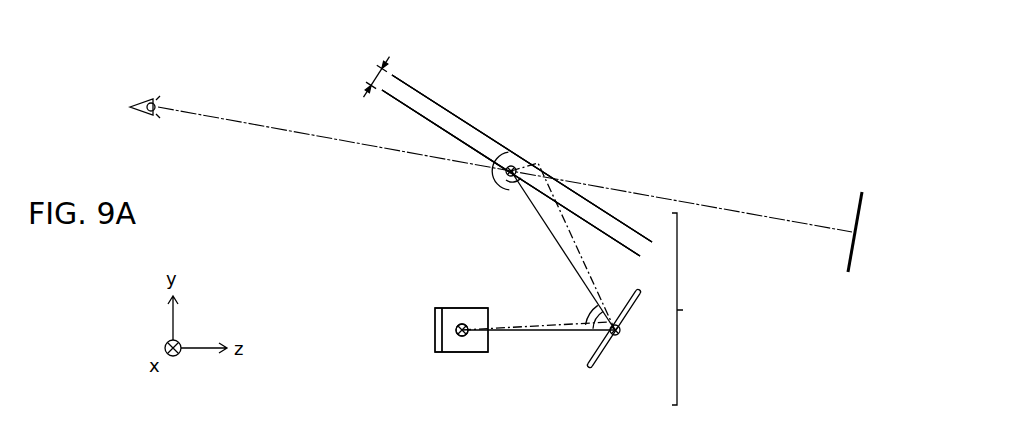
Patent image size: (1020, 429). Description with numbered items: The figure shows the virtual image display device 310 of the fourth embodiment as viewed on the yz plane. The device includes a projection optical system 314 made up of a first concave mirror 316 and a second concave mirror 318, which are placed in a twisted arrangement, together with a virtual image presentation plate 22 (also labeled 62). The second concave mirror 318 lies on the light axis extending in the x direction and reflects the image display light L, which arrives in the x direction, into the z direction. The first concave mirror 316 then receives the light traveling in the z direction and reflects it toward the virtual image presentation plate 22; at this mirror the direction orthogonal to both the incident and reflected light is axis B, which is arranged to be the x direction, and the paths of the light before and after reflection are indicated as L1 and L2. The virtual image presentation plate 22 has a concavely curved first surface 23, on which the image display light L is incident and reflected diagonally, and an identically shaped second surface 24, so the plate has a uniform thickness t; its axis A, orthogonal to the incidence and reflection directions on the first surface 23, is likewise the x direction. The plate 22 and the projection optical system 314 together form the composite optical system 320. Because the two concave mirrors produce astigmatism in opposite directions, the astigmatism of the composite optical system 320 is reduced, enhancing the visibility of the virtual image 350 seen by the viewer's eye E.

The virtual image presentation plate 22 is at (418, 60).
The light guide plate 62 is at (517, 165).
The first surface 23 is at (418, 112).
The second surface 24 is at (437, 92).
The thickness t is at (370, 72).
The axis A is at (516, 150).
The axis B is at (622, 336).
The eye of observer E is at (143, 93).
The image display light L is at (610, 272).
The light path L1 is at (568, 262).
The light path L2 is at (566, 228).
The virtual image display device 310 is at (399, 315).
The projection optical system 314 is at (428, 276).
The first concave mirror 316 is at (611, 350).
The second concave mirror 318 is at (466, 354).
The composite optical system 320 is at (703, 309).
The virtual image 350 is at (870, 160).